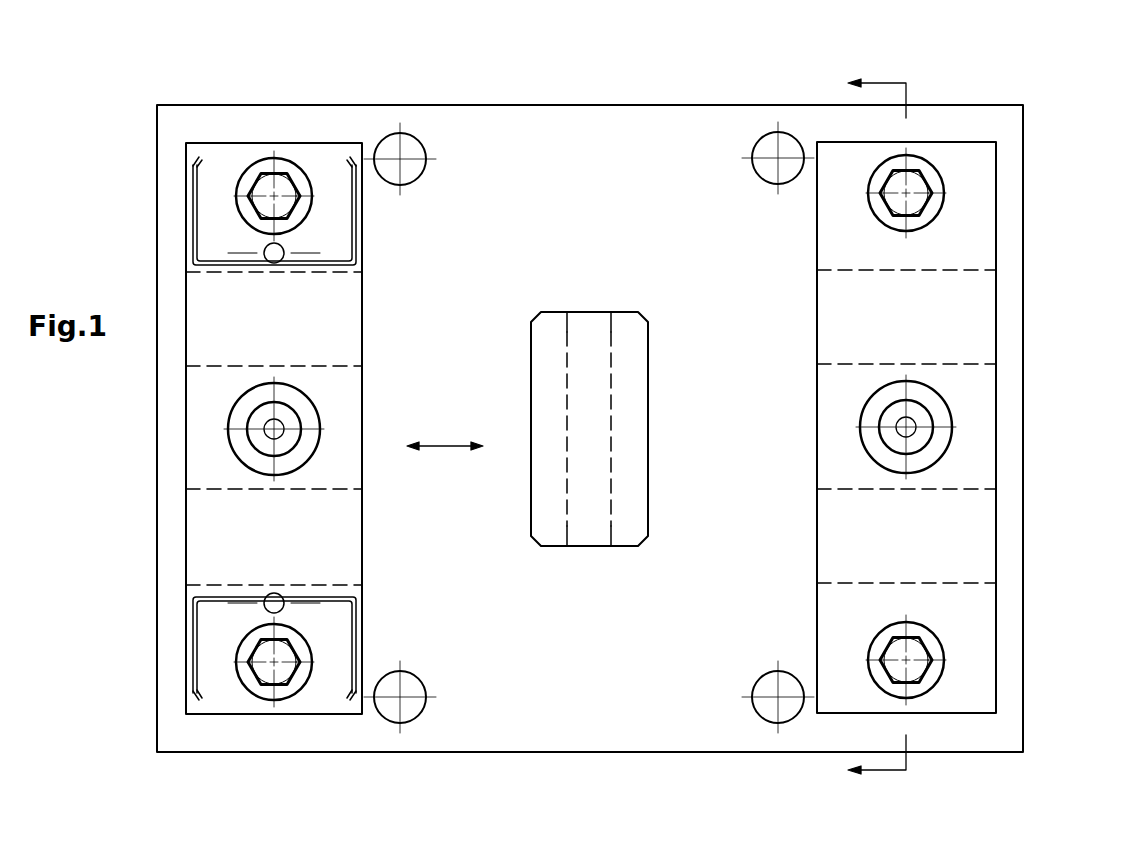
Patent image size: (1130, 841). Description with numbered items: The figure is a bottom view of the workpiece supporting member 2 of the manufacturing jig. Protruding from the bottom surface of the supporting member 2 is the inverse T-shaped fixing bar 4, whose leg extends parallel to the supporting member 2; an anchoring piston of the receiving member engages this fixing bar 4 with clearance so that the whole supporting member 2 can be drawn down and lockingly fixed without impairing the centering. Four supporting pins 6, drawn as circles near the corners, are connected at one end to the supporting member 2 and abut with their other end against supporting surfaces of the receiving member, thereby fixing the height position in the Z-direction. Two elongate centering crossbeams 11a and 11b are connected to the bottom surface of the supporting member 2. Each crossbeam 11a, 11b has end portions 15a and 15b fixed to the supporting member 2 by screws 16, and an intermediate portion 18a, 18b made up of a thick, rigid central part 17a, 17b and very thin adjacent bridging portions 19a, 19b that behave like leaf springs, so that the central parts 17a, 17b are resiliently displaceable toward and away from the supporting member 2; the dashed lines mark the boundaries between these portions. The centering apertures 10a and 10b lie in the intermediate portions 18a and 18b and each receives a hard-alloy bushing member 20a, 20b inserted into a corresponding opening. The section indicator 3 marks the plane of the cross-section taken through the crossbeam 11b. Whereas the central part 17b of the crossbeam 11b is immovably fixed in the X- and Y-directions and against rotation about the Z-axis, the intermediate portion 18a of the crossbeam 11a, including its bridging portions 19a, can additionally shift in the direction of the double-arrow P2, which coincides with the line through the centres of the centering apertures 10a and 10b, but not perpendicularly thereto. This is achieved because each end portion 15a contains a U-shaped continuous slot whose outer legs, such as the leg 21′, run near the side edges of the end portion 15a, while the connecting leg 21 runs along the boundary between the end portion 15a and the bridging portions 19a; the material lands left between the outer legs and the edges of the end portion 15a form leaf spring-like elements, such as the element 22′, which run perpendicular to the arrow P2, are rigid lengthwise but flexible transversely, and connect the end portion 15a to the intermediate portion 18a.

The workpiece supporting member 2 is at (639, 125).
The section line III-III 3 is at (867, 428).
The fixing bar 4 is at (635, 445).
The supporting pins 6 is at (412, 145).
The centering aperture 10a is at (262, 421).
The centering aperture 10b is at (923, 417).
The centering crossbeam 11a is at (388, 346).
The centering crossbeam 11b is at (794, 322).
The end portion 15a is at (320, 153).
The end portion 15b is at (973, 205).
The screws 16 is at (260, 181).
The central part 17a is at (350, 473).
The central part 17b is at (840, 461).
The intermediate portion 18a is at (400, 394).
The intermediate portion 18b is at (797, 384).
The bridging portions 19a is at (350, 312).
The bridging portions 19b is at (973, 313).
The bushing member 20a is at (240, 449).
The bushing member 20b is at (938, 450).
The leg of U-shaped slot 21 is at (302, 263).
The leg of U-shaped slot 21′ is at (357, 237).
The leaf spring-like element 22′ is at (362, 200).
The double-arrow P2 is at (445, 429).